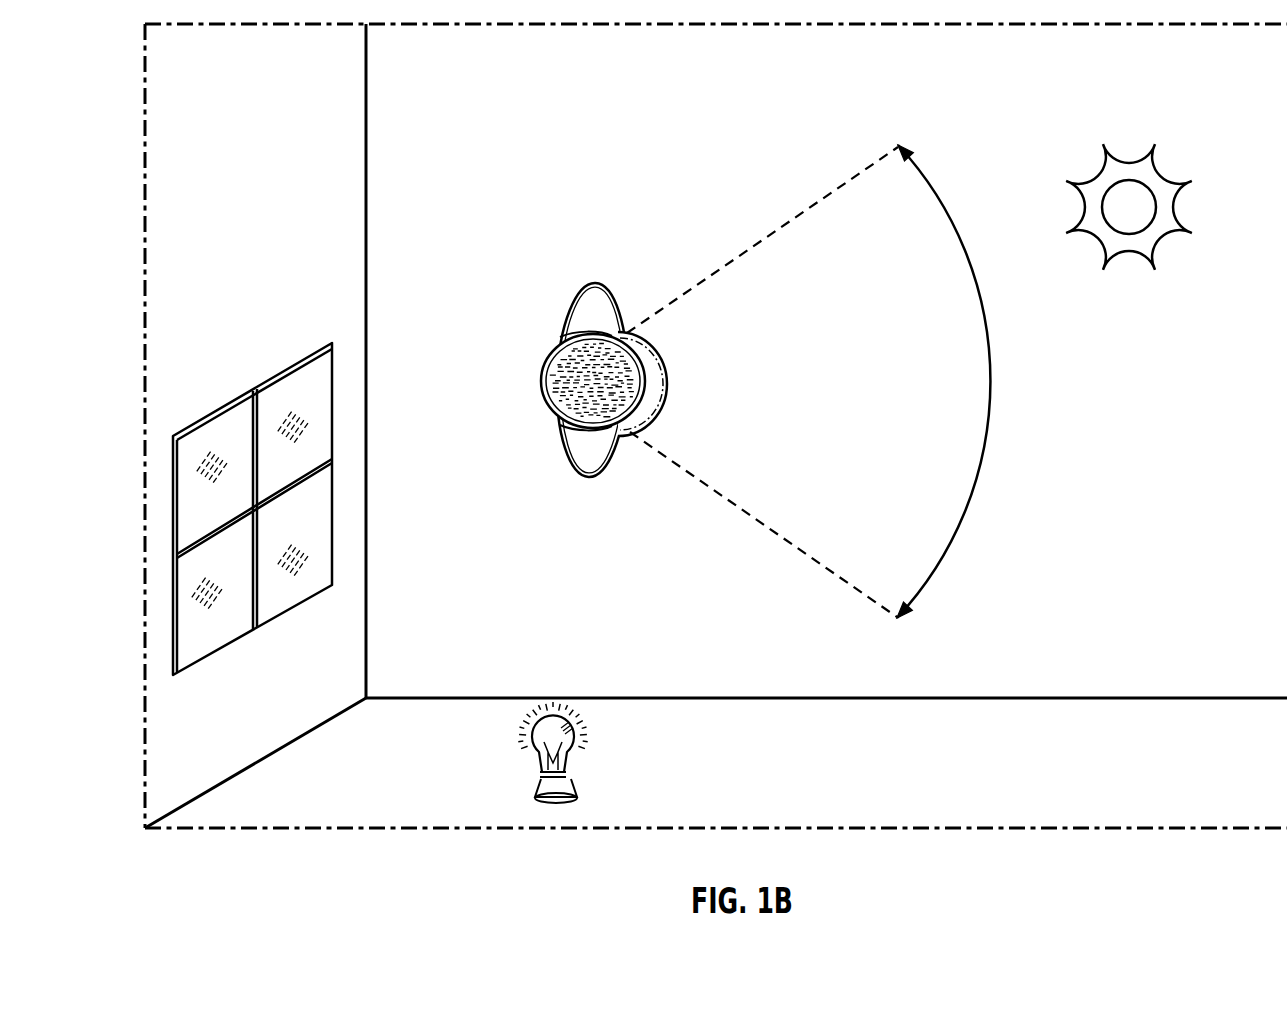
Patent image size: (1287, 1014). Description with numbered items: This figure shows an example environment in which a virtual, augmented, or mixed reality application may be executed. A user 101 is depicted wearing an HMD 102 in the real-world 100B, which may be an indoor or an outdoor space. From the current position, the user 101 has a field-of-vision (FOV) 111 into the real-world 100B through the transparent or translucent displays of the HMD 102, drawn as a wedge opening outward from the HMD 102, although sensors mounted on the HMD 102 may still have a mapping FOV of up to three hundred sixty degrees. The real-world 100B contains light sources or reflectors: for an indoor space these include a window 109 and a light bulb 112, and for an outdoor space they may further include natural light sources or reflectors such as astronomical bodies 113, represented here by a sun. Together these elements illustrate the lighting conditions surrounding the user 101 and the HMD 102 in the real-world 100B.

The real-world 100B is at (528, 607).
The user 101 is at (593, 478).
The HMD 102 is at (667, 380).
The window 109 is at (173, 500).
The field-of-vision (FOV) 111 is at (980, 302).
The light bulb 112 is at (575, 752).
The astronomical bodies 113 is at (1175, 218).